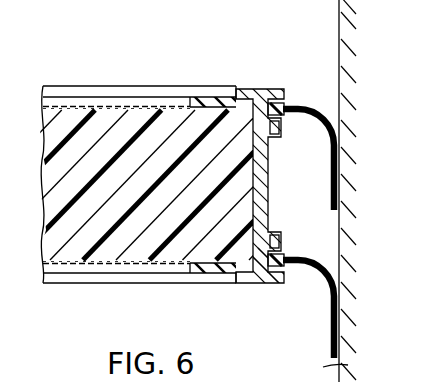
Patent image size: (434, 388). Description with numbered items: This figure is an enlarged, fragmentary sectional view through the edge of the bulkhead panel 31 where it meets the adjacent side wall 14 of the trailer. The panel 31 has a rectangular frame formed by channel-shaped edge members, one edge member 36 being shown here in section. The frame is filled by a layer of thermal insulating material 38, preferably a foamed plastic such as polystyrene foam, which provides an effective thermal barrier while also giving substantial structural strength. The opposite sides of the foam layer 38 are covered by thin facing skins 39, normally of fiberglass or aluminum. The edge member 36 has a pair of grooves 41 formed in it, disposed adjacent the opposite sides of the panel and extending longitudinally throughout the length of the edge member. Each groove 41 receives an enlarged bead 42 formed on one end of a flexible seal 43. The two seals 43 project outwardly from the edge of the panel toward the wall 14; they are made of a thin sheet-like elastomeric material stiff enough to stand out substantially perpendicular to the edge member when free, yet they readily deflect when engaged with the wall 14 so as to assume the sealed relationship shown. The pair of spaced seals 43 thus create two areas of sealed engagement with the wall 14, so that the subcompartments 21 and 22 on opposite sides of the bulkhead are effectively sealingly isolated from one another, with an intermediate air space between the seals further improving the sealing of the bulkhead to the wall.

The side wall 14 is at (345, 92).
The subcompartment 21 is at (347, 360).
The subcompartment 22 is at (315, 30).
The panel 31 is at (66, 84).
The edge member 36 is at (262, 175).
The thermal insulating material 38 is at (107, 125).
The facing skin 39 is at (147, 107).
The groove 41 is at (281, 104).
The enlarged bead 42 is at (268, 110).
The flexible seal 43 is at (330, 124).